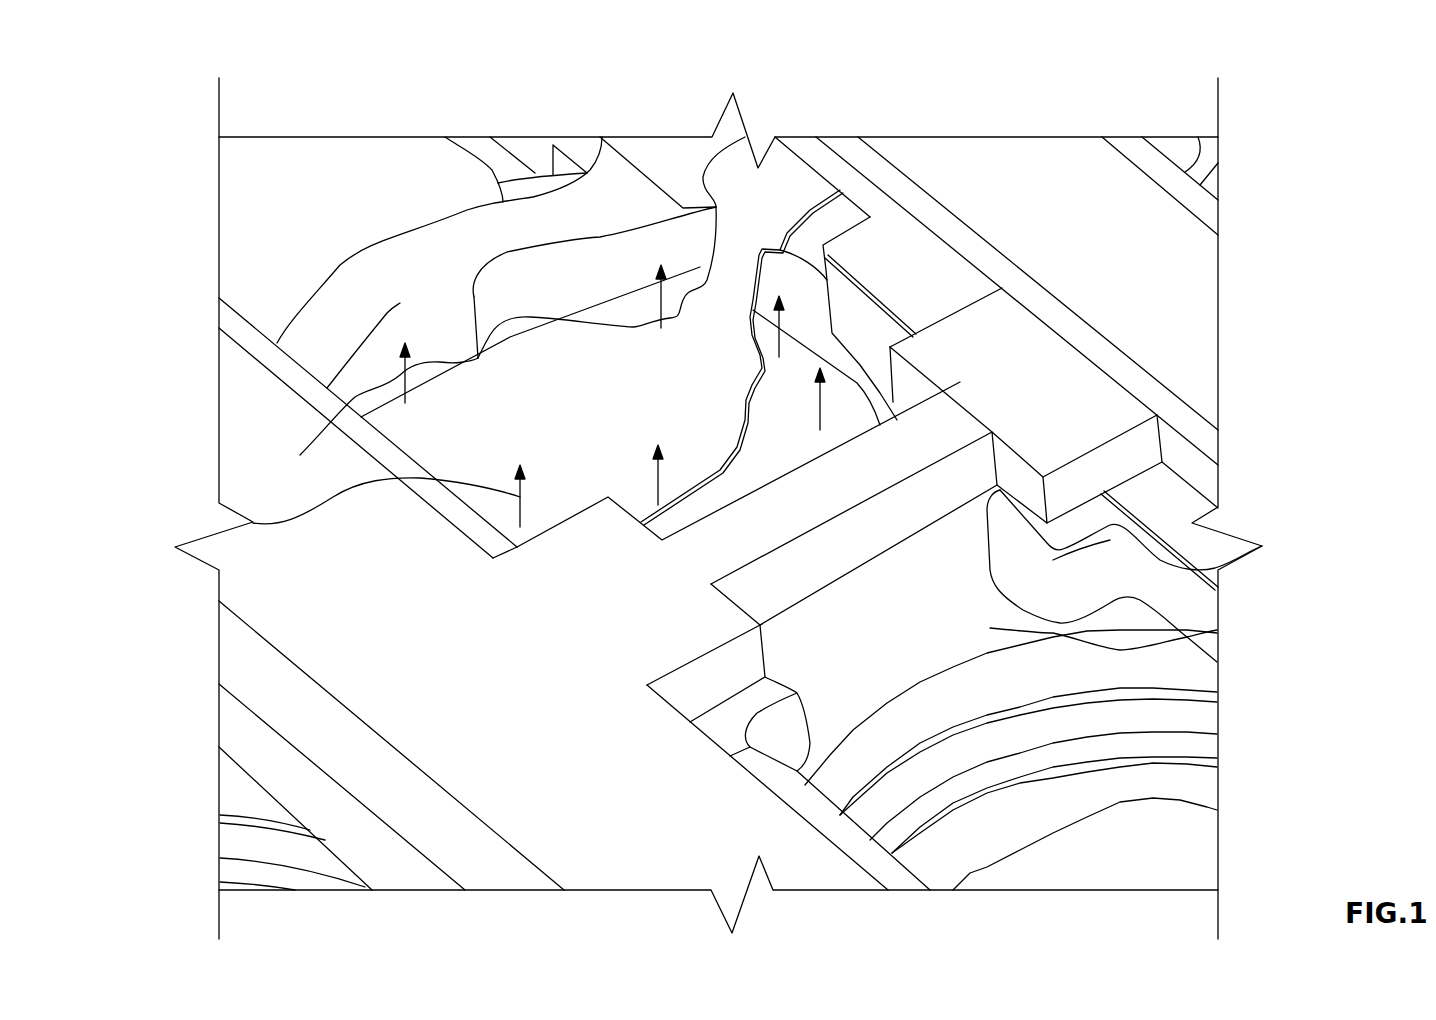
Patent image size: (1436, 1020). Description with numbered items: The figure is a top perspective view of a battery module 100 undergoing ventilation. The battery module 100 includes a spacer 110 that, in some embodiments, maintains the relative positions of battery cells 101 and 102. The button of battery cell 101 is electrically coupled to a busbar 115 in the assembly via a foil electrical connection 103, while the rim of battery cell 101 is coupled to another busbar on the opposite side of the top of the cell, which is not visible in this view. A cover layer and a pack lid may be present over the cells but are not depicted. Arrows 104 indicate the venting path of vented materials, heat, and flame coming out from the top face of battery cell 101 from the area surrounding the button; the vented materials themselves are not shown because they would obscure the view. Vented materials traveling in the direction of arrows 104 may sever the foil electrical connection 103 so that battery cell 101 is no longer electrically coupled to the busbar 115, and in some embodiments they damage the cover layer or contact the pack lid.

The battery module 100 is at (741, 41).
The battery cell 101 is at (833, 435).
The battery cell 102 is at (1122, 783).
The foil electrical connection 103 is at (617, 388).
The arrows 104 is at (300, 455).
The spacer 110 is at (1217, 630).
The busbar 115 is at (1262, 546).